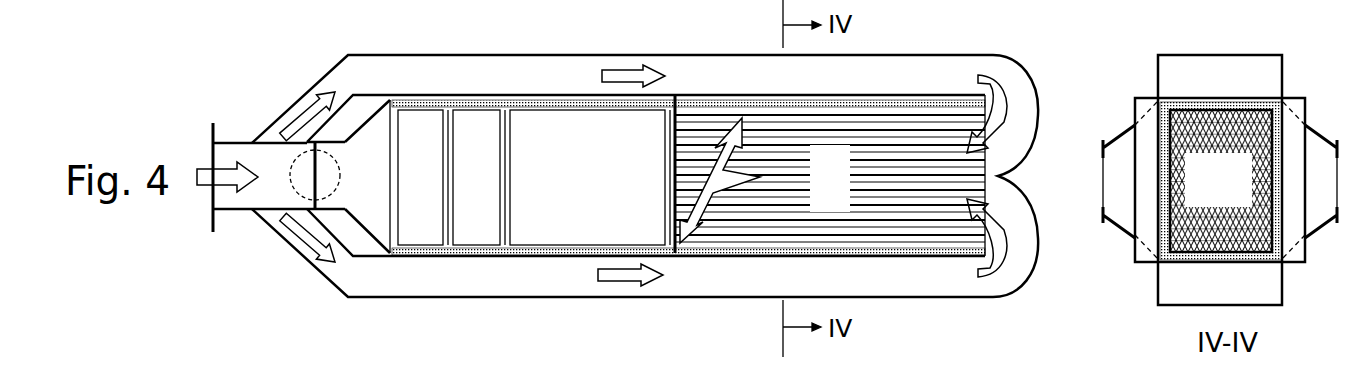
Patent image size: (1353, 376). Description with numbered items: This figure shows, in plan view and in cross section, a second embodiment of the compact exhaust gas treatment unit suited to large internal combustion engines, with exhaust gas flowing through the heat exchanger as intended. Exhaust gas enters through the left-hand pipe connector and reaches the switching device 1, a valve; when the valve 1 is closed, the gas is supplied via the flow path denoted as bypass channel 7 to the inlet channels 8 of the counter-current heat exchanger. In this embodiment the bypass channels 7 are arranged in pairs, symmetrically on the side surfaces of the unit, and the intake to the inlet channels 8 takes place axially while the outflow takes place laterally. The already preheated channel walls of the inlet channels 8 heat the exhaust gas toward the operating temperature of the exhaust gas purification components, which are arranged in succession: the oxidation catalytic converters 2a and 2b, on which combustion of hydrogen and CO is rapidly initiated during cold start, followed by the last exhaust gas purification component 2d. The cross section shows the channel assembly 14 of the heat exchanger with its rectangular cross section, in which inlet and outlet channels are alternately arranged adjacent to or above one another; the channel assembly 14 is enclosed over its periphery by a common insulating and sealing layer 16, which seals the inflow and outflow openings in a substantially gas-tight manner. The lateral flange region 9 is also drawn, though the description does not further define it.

The switching device 1 is at (315, 175).
The oxidation catalytic converter 2a is at (423, 177).
The oxidation catalytic converter 2b is at (479, 177).
The exhaust gas purification component 2d is at (590, 177).
The bypass channel 7 is at (767, 180).
The inlet channels 8 is at (830, 174).
The flange 9 is at (1319, 181).
The channel assembly 14 is at (1221, 181).
The insulating and sealing layer 16 is at (1172, 105).